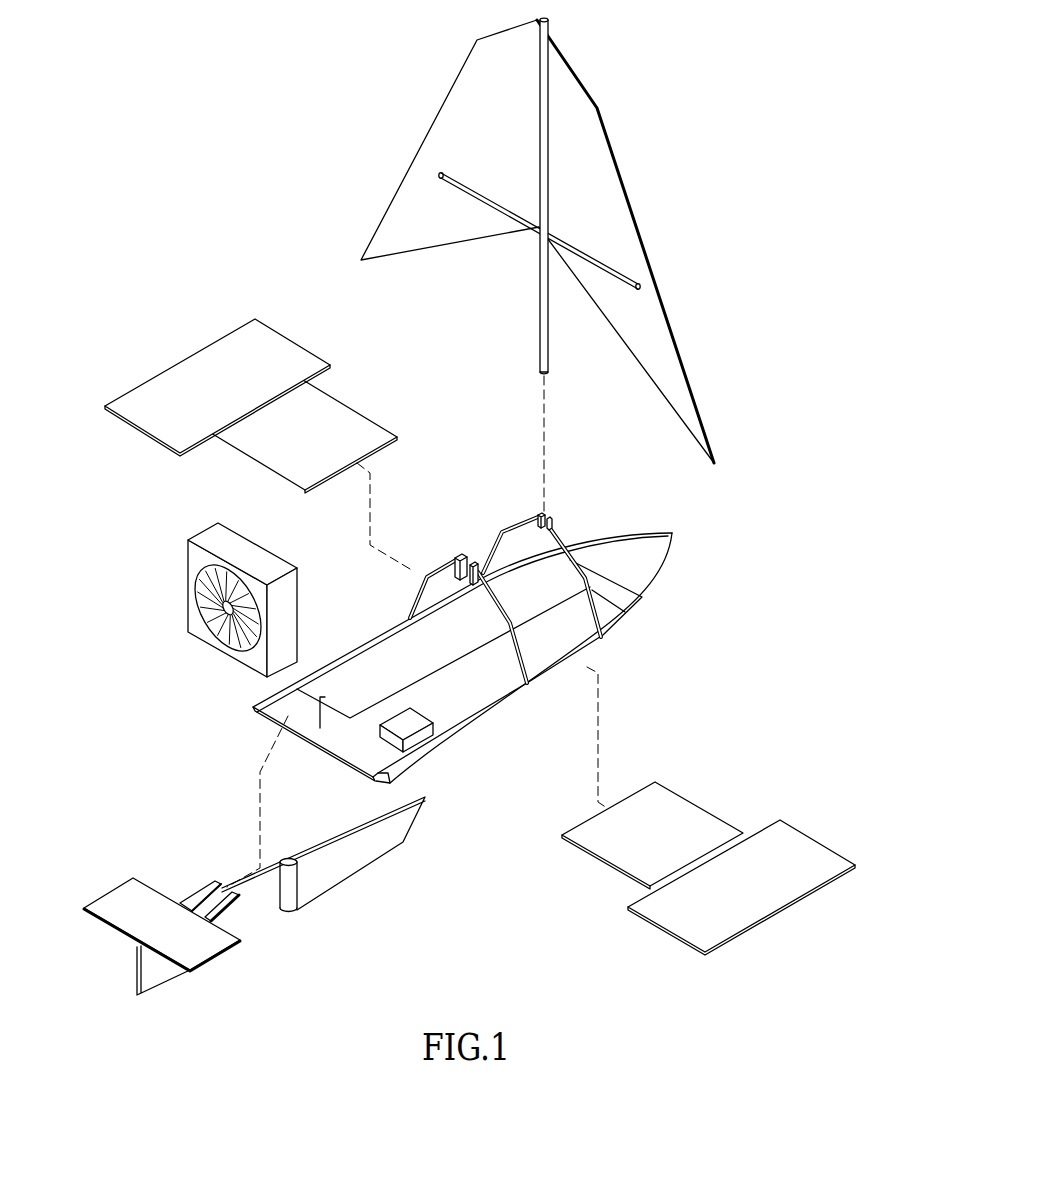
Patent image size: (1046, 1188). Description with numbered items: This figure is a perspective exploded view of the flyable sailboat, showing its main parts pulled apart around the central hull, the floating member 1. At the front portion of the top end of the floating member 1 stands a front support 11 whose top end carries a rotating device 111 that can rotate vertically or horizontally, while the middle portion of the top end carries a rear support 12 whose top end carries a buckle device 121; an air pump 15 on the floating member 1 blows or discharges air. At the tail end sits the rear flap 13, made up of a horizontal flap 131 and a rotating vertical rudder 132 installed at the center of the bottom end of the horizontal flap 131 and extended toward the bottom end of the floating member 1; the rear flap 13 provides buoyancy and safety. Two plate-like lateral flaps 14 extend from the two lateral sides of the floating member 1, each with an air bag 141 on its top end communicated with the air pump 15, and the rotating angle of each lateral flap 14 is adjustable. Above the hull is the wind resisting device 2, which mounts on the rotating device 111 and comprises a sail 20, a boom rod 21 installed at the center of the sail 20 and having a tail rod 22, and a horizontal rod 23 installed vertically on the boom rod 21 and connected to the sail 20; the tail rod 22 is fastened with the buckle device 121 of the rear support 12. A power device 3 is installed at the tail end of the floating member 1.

The floating member 1 is at (499, 671).
The front support 11 is at (600, 615).
The rear support 12 is at (518, 695).
The rear flap 13 is at (278, 896).
The horizontal flap 131 is at (135, 898).
The rotating vertical rudder 132 is at (257, 915).
The lateral flap 14 is at (335, 363).
The air bag 141 is at (188, 368).
The air pump 15 is at (417, 737).
The rotating device 111 is at (540, 513).
The buckle device 121 is at (462, 552).
The wind resisting device 2 is at (303, 63).
The sail 20 is at (630, 201).
The boom rod 21 is at (550, 21).
The tail rod 22 is at (541, 362).
The horizontal rod 23 is at (457, 171).
The power device 3 is at (195, 580).